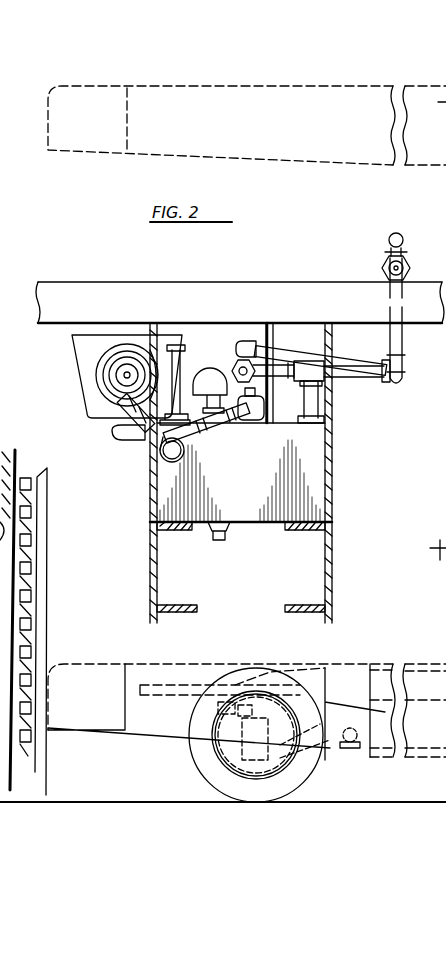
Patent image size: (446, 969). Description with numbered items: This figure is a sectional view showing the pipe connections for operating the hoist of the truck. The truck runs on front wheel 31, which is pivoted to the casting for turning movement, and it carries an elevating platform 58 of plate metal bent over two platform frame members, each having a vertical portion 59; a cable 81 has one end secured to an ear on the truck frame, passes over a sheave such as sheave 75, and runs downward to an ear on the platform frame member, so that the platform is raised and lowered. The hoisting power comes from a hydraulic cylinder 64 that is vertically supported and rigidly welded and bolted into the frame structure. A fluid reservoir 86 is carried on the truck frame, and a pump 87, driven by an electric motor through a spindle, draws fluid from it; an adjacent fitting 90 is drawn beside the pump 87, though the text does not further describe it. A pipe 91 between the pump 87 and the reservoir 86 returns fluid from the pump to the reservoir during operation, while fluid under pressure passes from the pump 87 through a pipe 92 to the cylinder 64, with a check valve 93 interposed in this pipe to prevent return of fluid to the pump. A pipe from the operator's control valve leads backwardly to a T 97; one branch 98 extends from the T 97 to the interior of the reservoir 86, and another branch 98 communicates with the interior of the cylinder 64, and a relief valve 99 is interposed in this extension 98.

The elevating platform 58 is at (104, 92).
The sheave 75 is at (433, 104).
The cable 81 is at (414, 322).
The pump 87 is at (88, 368).
The column 90 is at (182, 380).
The pipe 91 is at (122, 428).
The pipe 92 is at (205, 440).
The check valve 93 is at (248, 420).
The relief valve 99 is at (236, 369).
The branch 98 is at (272, 370).
The T 97 is at (327, 377).
The hydraulic cylinder 64 is at (273, 386).
The fluid reservoir 86 is at (257, 513).
The vertical portion 59 is at (425, 550).
The front wheel 31 is at (215, 772).